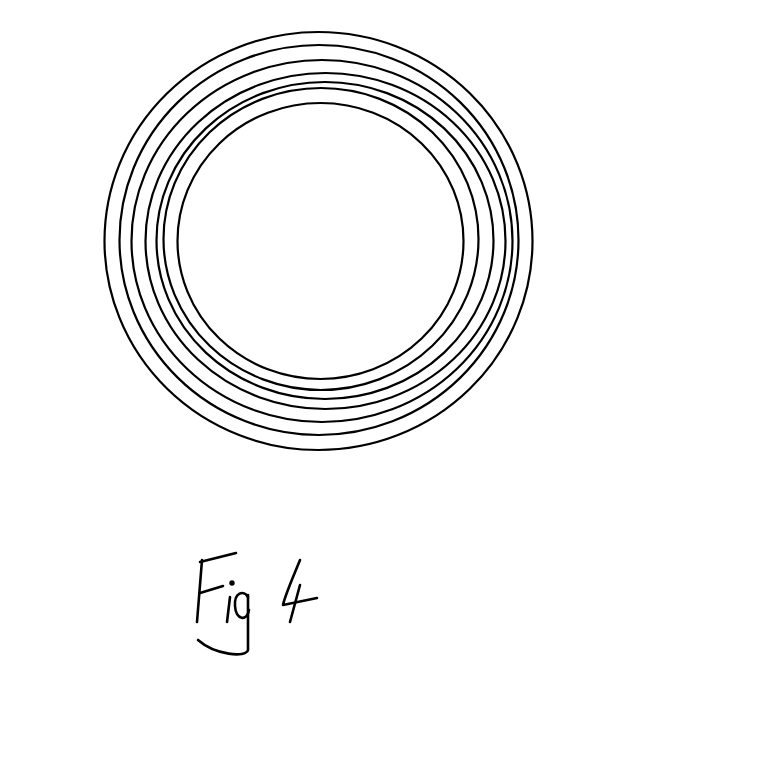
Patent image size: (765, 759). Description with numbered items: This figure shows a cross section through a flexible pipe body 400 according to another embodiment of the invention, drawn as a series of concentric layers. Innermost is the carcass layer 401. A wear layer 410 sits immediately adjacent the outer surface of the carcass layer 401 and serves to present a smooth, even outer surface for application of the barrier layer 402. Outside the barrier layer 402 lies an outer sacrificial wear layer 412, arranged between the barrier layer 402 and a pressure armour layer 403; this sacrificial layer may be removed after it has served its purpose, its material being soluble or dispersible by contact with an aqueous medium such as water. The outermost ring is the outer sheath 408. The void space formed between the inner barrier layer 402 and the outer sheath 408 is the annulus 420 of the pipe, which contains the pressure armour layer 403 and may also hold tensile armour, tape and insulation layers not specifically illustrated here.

The flexible pipe body 400 is at (513, 85).
The carcass layer 401 is at (420, 130).
The barrier layer 402 is at (462, 323).
The pressure armour layer 403 is at (383, 410).
The outer sheath 408 is at (187, 398).
The wear layer 410 is at (483, 255).
The outer sacrificial wear layer 412 is at (412, 389).
The annulus 420 is at (488, 186).